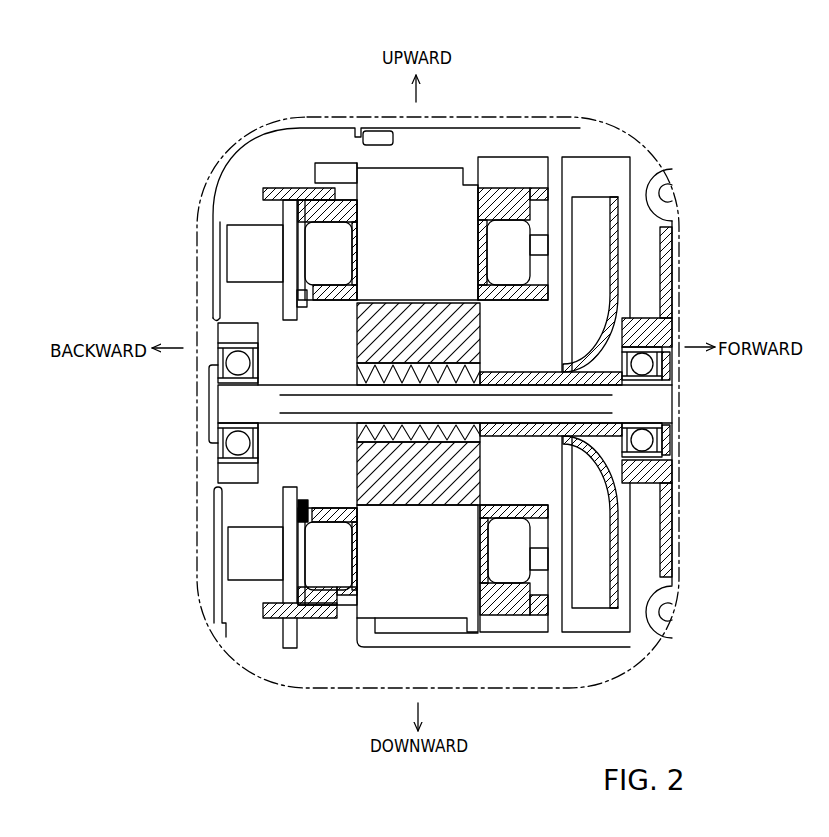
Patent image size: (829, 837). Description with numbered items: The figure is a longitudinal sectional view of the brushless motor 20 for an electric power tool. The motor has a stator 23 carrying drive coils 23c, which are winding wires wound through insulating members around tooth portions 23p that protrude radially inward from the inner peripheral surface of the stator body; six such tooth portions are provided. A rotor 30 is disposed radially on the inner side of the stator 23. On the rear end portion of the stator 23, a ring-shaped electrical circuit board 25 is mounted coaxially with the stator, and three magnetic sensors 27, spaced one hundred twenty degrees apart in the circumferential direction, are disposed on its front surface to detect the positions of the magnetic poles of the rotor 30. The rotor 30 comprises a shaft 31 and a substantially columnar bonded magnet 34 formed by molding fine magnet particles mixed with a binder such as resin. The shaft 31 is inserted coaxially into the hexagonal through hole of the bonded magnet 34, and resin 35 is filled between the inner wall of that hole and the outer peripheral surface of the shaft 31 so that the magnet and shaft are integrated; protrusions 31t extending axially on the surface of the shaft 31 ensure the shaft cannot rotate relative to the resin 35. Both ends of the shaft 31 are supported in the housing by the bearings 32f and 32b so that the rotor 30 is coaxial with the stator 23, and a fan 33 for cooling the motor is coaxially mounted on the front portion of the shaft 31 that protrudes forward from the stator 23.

The brushless motor 20 is at (522, 126).
The stator 23 is at (363, 166).
The tooth portions 23p is at (435, 217).
The drive coils 23c is at (507, 240).
The electrical circuit board 25 is at (297, 260).
The magnetic sensors 27 is at (279, 247).
The rotor 30 is at (322, 440).
The shaft 31 is at (485, 438).
The protrusions 31t is at (495, 413).
The bearing 32b is at (233, 343).
The bearing 32f is at (640, 350).
The fan 33 is at (588, 217).
The bonded magnet 34 is at (353, 338).
The resin 35 is at (468, 373).